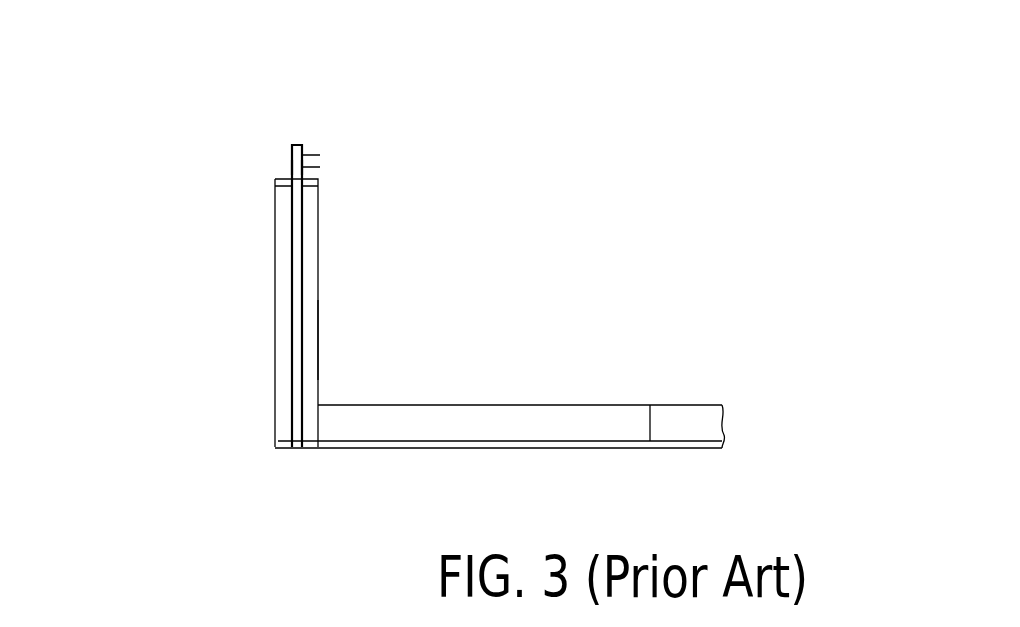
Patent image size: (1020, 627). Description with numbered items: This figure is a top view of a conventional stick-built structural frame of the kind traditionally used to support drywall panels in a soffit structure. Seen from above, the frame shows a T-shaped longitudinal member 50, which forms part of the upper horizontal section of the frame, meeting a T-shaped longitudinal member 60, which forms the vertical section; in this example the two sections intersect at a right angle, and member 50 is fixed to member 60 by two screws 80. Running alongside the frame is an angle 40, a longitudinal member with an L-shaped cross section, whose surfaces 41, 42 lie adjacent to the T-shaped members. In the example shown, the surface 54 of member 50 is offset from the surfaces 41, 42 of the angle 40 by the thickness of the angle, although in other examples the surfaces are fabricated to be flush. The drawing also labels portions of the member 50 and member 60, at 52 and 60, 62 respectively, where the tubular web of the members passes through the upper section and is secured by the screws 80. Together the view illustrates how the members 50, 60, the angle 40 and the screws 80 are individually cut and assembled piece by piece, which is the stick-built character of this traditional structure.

The angle 40 is at (582, 424).
The surface 41 is at (650, 424).
The surface 42 is at (563, 448).
The member 50 is at (310, 262).
The inner post 52 is at (297, 298).
The surface 54 is at (310, 338).
The member 60 is at (303, 145).
The post top end 62 is at (297, 167).
The screws 80 is at (290, 155).